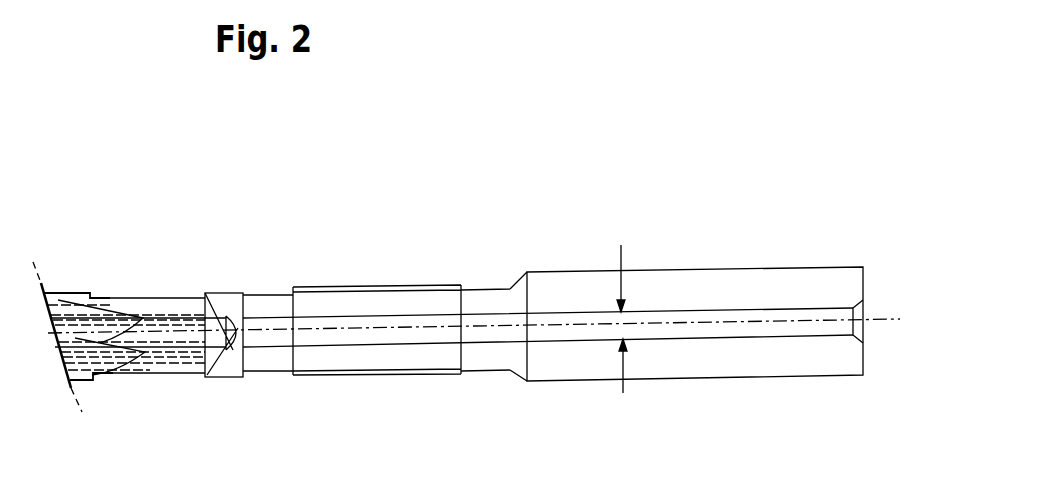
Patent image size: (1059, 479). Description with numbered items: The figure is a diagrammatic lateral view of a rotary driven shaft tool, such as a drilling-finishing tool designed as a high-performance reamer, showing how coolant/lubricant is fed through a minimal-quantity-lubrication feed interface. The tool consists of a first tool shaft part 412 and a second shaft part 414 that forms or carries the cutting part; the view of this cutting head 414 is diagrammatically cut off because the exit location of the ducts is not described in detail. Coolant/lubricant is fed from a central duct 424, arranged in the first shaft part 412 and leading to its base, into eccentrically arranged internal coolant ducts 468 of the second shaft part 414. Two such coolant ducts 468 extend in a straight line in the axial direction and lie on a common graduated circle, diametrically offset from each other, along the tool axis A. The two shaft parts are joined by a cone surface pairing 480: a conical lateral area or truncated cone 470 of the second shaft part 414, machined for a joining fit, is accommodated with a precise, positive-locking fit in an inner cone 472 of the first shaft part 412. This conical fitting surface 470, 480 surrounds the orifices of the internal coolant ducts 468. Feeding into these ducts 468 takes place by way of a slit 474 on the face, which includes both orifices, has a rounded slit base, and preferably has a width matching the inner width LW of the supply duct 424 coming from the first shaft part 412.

The second shaft part 414 is at (88, 305).
The internal coolant ducts 468 is at (165, 315).
The inner cone 472 is at (215, 297).
The cone surface pairing 480 is at (222, 304).
The truncated cone 470 is at (208, 377).
The slit 474 is at (233, 350).
The first tool shaft part 412 is at (277, 303).
The central duct 424 is at (348, 318).
The optical axis A is at (270, 333).
The inner width LW is at (620, 316).